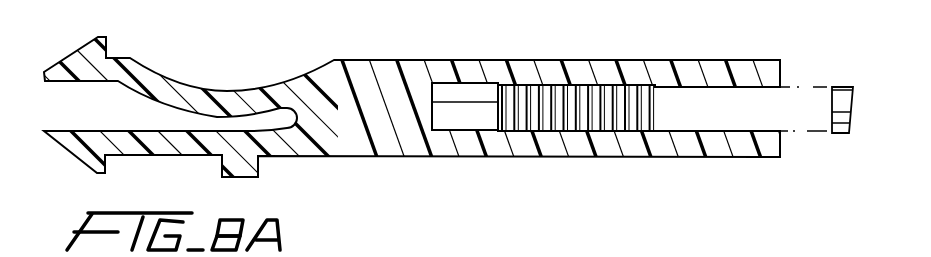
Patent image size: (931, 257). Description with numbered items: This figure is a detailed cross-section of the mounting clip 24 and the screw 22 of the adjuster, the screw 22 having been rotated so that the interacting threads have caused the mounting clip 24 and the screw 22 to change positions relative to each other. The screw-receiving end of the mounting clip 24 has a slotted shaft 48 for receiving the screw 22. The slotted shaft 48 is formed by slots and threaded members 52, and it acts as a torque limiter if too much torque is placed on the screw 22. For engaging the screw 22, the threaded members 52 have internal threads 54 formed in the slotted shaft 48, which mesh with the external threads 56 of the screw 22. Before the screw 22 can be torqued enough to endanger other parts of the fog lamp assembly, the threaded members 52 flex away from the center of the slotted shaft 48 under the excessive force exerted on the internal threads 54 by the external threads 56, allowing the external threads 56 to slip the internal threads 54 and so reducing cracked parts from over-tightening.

The screw 22 is at (808, 102).
The mounting clip 24 is at (343, 92).
The slotted shaft 48 is at (465, 110).
The threaded members 52 is at (622, 65).
The internal threads 54 is at (560, 84).
The external threads 56 is at (647, 108).